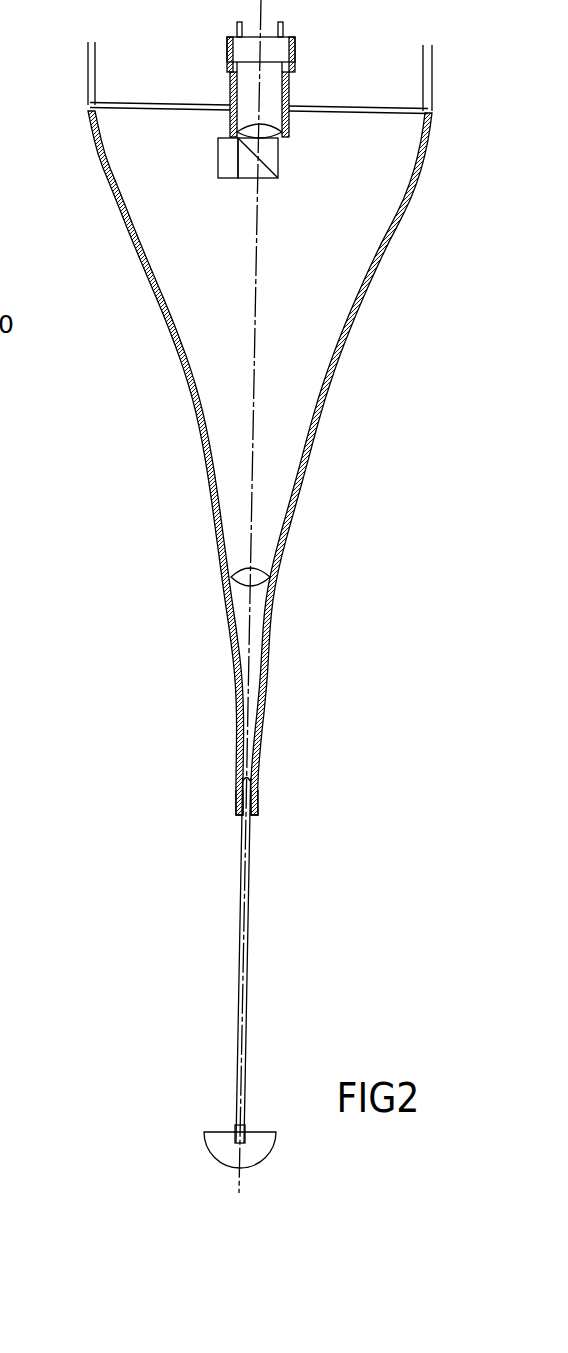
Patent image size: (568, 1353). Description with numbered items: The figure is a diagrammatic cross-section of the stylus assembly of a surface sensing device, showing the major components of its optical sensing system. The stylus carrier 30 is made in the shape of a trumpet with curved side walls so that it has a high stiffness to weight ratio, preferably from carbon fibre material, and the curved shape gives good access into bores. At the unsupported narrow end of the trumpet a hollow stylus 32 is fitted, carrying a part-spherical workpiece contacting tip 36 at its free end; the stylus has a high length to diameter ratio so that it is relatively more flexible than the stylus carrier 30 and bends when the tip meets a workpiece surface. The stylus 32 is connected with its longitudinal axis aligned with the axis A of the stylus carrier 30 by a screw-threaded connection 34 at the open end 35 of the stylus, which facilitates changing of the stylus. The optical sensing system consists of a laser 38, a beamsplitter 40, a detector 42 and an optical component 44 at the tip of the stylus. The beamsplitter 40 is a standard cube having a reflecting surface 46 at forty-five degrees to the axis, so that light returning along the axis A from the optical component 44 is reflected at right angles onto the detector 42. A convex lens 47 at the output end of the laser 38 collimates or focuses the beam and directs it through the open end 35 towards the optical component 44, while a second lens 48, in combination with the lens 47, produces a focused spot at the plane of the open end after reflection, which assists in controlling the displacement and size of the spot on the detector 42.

The stylus carrier 30 is at (208, 495).
The hollow stylus 32 is at (240, 898).
The screw-threaded connection 34 is at (235, 799).
The open end 35 is at (259, 796).
The workpiece contacting tip 36 is at (220, 1165).
The laser 38 is at (248, 86).
The beamsplitter 40 is at (250, 172).
The detector 42 is at (222, 158).
The optical component 44 is at (237, 1135).
The reflecting surface 46 is at (270, 165).
The convex lens 47 is at (267, 132).
The second lens 48 is at (263, 592).
The axis A is at (253, 392).